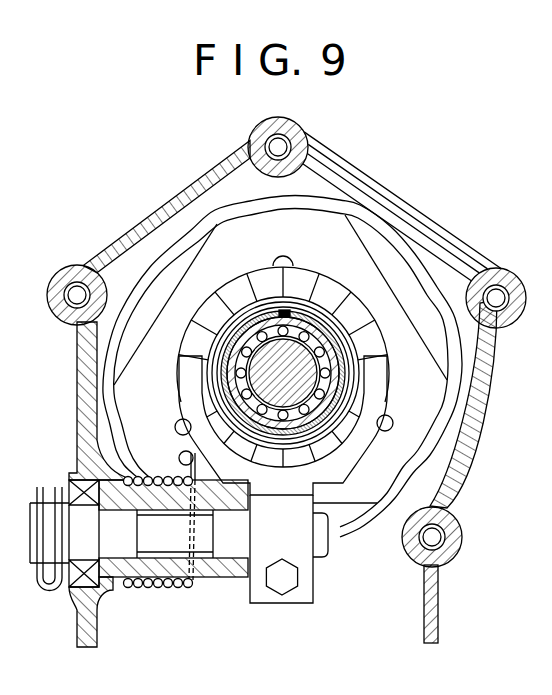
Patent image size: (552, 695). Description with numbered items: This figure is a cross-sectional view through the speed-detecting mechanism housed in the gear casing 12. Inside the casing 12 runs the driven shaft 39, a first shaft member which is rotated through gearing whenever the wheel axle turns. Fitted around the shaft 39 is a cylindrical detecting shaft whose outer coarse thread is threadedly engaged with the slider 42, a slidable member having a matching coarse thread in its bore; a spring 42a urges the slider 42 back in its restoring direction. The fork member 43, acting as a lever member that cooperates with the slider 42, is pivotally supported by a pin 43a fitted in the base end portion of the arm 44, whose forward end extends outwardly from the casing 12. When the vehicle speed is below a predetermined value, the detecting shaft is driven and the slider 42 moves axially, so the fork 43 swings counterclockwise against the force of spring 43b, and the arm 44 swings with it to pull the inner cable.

The gear casing 12 is at (456, 250).
The driven shaft 39 is at (293, 388).
The slider 42 is at (331, 287).
The spring 42a is at (285, 310).
The fork member 43 is at (386, 398).
The pin 43a is at (333, 543).
The spring 43b is at (180, 587).
The arm 44 is at (43, 583).